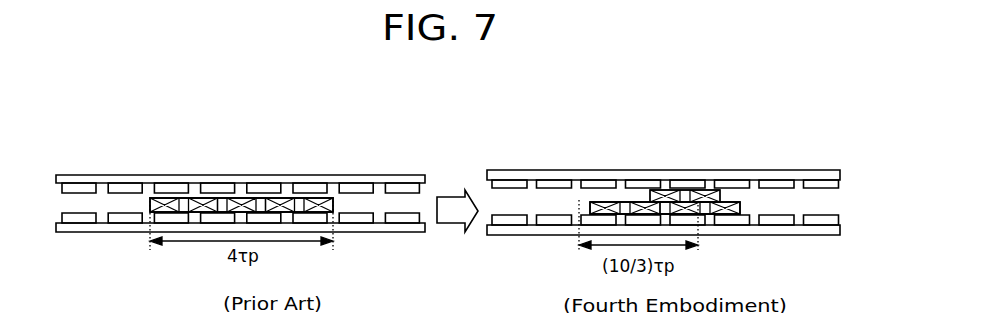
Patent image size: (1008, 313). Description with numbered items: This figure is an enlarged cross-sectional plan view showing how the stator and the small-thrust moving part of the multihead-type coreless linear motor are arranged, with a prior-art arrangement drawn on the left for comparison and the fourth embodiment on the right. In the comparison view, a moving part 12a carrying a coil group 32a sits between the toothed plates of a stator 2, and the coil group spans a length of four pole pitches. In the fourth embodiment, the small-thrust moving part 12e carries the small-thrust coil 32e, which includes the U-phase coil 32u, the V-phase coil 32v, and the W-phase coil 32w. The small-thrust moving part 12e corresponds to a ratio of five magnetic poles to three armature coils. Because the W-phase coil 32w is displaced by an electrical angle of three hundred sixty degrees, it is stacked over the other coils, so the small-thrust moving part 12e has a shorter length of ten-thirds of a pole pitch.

The stator core 2 is at (118, 222).
The coil unit (prior art) 12a is at (150, 197).
The small-thrust moving part 12e is at (580, 200).
The coil group (prior art) 32a is at (343, 102).
The small-thrust coil 32e is at (785, 92).
The U-phase coil 32u is at (195, 203).
The V-phase coil 32v is at (317, 203).
The W-phase coil 32w is at (243, 203).